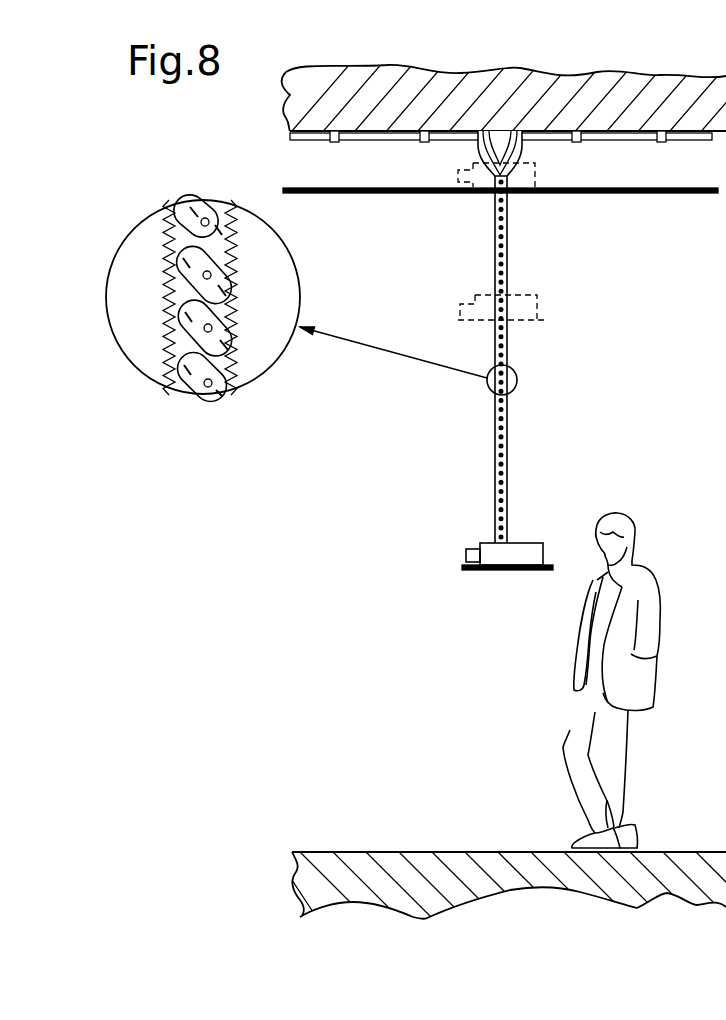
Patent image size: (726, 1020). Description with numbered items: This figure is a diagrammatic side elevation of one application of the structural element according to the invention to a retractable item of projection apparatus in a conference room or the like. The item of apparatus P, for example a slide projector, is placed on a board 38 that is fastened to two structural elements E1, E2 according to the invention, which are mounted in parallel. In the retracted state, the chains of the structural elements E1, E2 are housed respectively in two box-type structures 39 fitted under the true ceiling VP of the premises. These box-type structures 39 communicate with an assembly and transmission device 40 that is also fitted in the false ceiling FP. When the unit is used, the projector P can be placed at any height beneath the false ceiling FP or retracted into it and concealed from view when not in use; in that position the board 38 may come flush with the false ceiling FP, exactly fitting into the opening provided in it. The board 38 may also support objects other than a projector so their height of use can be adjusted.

The true ceiling VP is at (582, 93).
The box-type structures 39 is at (378, 141).
The assembly and transmission device 40 is at (532, 153).
The false ceiling FP is at (660, 195).
The structural element E1 is at (563, 370).
The structural element E2 is at (508, 445).
The item of apparatus P is at (537, 545).
The board 38 is at (490, 571).